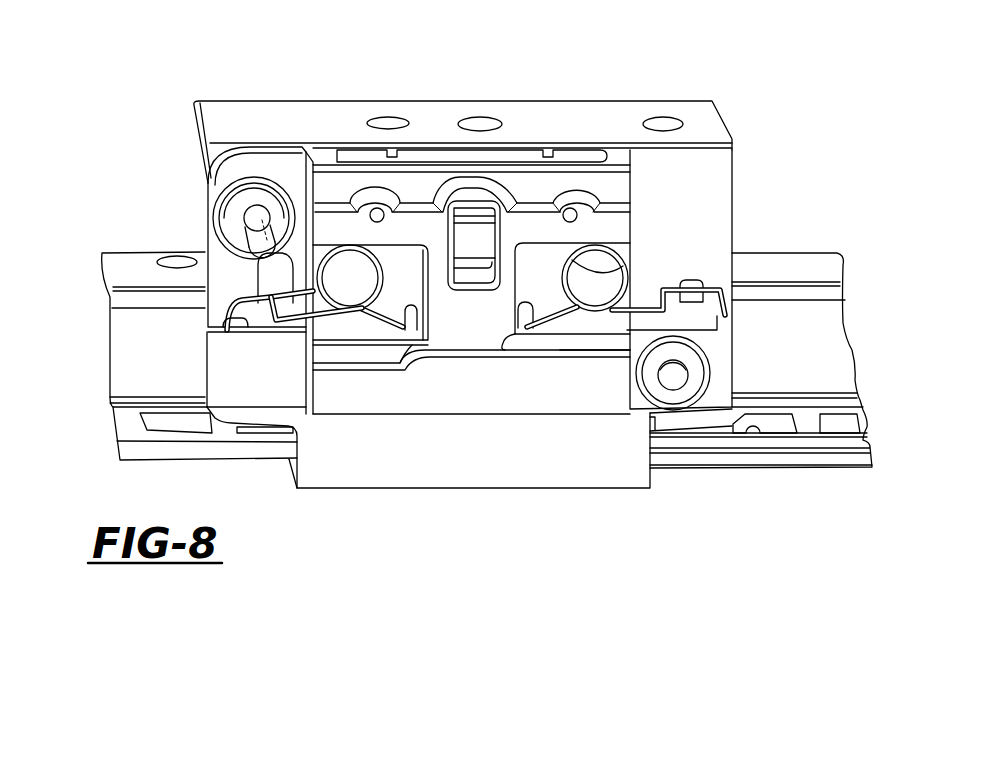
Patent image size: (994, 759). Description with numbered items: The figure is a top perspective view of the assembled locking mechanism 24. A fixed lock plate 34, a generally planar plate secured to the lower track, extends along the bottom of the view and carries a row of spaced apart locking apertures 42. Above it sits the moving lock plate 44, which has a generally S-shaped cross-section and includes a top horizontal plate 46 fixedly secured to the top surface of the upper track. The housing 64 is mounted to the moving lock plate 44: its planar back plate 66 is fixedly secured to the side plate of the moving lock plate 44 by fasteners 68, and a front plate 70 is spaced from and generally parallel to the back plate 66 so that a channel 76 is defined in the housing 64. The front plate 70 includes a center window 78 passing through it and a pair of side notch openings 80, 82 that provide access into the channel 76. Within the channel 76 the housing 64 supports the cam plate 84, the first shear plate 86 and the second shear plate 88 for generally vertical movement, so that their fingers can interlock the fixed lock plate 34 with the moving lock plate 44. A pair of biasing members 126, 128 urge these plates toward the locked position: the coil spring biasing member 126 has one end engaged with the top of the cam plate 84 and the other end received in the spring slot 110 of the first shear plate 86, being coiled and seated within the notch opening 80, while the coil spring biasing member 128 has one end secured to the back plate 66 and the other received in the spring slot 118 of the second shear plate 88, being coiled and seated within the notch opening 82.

The locking mechanism 24 is at (178, 100).
The fixed lock plate 34 is at (793, 242).
The locking apertures 42 is at (764, 430).
The moving lock plate 44 is at (740, 128).
The top horizontal plate 46 is at (582, 134).
The housing 64 is at (194, 206).
The back plate 66 is at (733, 205).
The fasteners 68 is at (266, 216).
The front plate 70 is at (396, 235).
The channel 76 is at (592, 156).
The center window 78 is at (485, 225).
The side notch opening 80 is at (332, 341).
The side notch opening 82 is at (593, 345).
The cam plate 84 is at (246, 318).
The first shear plate 86 is at (390, 279).
The second shear plate 88 is at (523, 285).
The spring slot 110 is at (412, 345).
The spring slot 118 is at (506, 343).
The biasing member 126 is at (360, 313).
The biasing member 128 is at (624, 268).